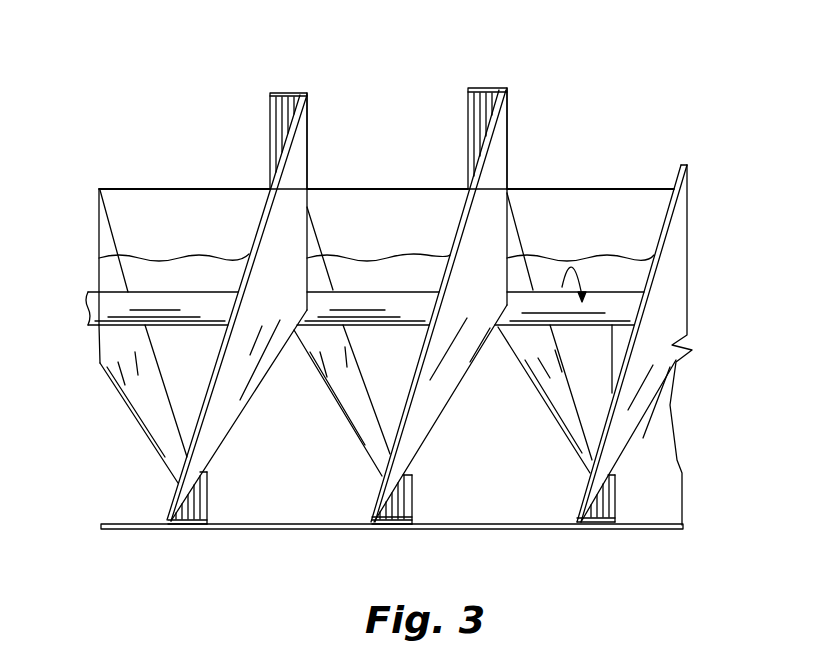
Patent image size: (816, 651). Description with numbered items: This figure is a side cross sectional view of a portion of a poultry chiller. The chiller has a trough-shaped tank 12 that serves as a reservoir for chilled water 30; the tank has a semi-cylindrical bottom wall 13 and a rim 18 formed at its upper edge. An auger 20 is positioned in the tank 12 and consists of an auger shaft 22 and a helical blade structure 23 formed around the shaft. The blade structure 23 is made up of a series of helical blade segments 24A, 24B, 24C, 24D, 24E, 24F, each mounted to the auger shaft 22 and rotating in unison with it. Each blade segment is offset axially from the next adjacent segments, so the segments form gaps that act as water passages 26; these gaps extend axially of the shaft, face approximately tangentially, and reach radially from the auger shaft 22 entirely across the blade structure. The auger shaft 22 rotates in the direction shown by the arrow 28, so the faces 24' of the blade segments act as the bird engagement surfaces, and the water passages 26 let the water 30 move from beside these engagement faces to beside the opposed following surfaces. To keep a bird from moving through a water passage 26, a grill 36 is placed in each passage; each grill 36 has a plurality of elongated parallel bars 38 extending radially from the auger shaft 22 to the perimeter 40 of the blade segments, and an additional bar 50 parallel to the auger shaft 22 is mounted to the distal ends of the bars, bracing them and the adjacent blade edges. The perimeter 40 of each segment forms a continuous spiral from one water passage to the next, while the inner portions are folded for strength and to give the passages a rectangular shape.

The tank 12 is at (612, 200).
The semi-cylindrical bottom wall 13 is at (262, 529).
The rim 18 is at (183, 189).
The auger 20 is at (320, 125).
The auger shaft 22 is at (205, 302).
The helical blade structure 23 is at (497, 183).
The faces 24' is at (419, 301).
The helical blade segment 24A is at (655, 385).
The helical blade segment 24B is at (577, 443).
The helical blade segment 24C is at (420, 433).
The helical blade segment 24D is at (365, 447).
The helical blade segment 24E is at (222, 413).
The helical blade segment 24F is at (140, 415).
The water passages 26 is at (297, 97).
The arrow 28 is at (585, 279).
The water 30 is at (586, 252).
The grill 36 is at (412, 500).
The elongated parallel bars 38 is at (290, 112).
The perimeter 40 is at (262, 223).
The additional bar 50 is at (480, 86).